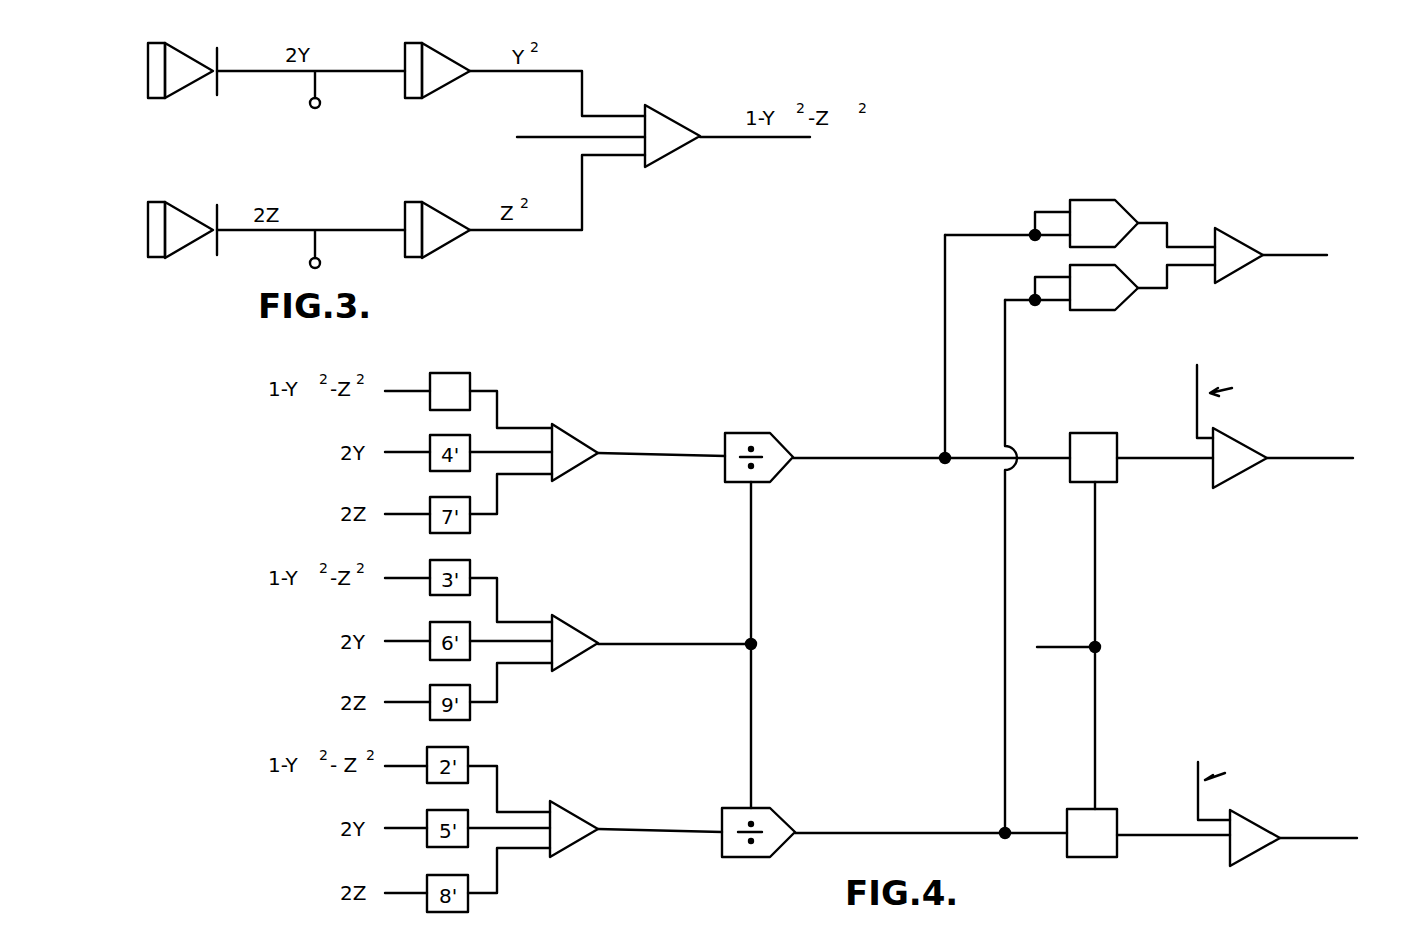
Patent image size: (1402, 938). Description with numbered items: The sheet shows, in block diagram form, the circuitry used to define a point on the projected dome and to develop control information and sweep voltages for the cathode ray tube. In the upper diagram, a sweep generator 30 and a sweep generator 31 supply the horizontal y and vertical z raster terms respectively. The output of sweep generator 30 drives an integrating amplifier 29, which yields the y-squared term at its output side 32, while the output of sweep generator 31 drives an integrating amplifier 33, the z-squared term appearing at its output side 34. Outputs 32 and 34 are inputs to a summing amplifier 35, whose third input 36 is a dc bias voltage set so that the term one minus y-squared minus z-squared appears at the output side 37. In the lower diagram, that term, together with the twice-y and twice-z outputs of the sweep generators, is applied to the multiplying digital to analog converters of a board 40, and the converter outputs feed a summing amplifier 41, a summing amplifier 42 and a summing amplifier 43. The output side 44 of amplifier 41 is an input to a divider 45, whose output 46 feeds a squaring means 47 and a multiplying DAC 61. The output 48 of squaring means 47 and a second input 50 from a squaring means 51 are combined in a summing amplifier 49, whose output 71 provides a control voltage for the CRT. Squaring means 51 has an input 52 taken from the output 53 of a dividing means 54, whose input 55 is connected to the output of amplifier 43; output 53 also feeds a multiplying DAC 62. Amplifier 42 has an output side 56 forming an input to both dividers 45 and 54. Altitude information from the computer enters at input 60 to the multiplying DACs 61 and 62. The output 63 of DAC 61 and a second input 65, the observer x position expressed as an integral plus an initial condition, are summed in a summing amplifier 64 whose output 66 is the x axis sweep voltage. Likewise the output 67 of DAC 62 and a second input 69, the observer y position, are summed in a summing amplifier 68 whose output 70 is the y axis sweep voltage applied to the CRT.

In FIG. 3, the integrating amplifier 29 is at (452, 60).
In FIG. 3, the sweep generator 30 is at (178, 43).
In FIG. 3, the sweep generator 31 is at (199, 188).
In FIG. 3, the output side 32 is at (584, 92).
In FIG. 3, the integrating amplifier 33 is at (440, 210).
In FIG. 3, the output side 34 is at (585, 212).
In FIG. 3, the summing amplifier 35 is at (670, 112).
In FIG. 3, the third input 36 is at (552, 110).
In FIG. 3, the output side 37 is at (706, 140).
In FIG. 4, the board 40 is at (455, 368).
In FIG. 4, the summing amplifier 41 is at (573, 432).
In FIG. 4, the summing amplifier 42 is at (572, 630).
In FIG. 4, the summing amplifier 43 is at (572, 814).
In FIG. 4, the output side 44 is at (632, 454).
In FIG. 4, the divider 45 is at (778, 442).
In FIG. 4, the output 46 is at (846, 456).
In FIG. 4, the squaring means 47 is at (1090, 200).
In FIG. 4, the output 48 is at (1150, 222).
In FIG. 4, the summing amplifier 49 is at (1232, 240).
In FIG. 4, the second input 50 is at (1188, 268).
In FIG. 4, the squaring means 51 is at (1103, 310).
In FIG. 4, the input 52 is at (1010, 382).
In FIG. 4, the output 53 is at (903, 832).
In FIG. 4, the dividing means 54 is at (788, 815).
In FIG. 4, the input 55 is at (655, 830).
In FIG. 4, the output side 56 is at (703, 626).
In FIG. 4, the input 60 is at (1080, 630).
In FIG. 4, the multiplying DAC 61 is at (1068, 478).
In FIG. 4, the multiplying DAC 62 is at (1076, 809).
In FIG. 4, the output 63 is at (1178, 435).
In FIG. 4, the summing amplifier 64 is at (1240, 448).
In FIG. 4, the second input 65 is at (1196, 392).
In FIG. 4, the output 66 is at (1310, 458).
In FIG. 4, the output 67 is at (1158, 835).
In FIG. 4, the summing amplifier 68 is at (1258, 830).
In FIG. 4, the second input 69 is at (1197, 796).
In FIG. 4, the output 70 is at (1328, 838).
In FIG. 4, the output 71 is at (1300, 255).